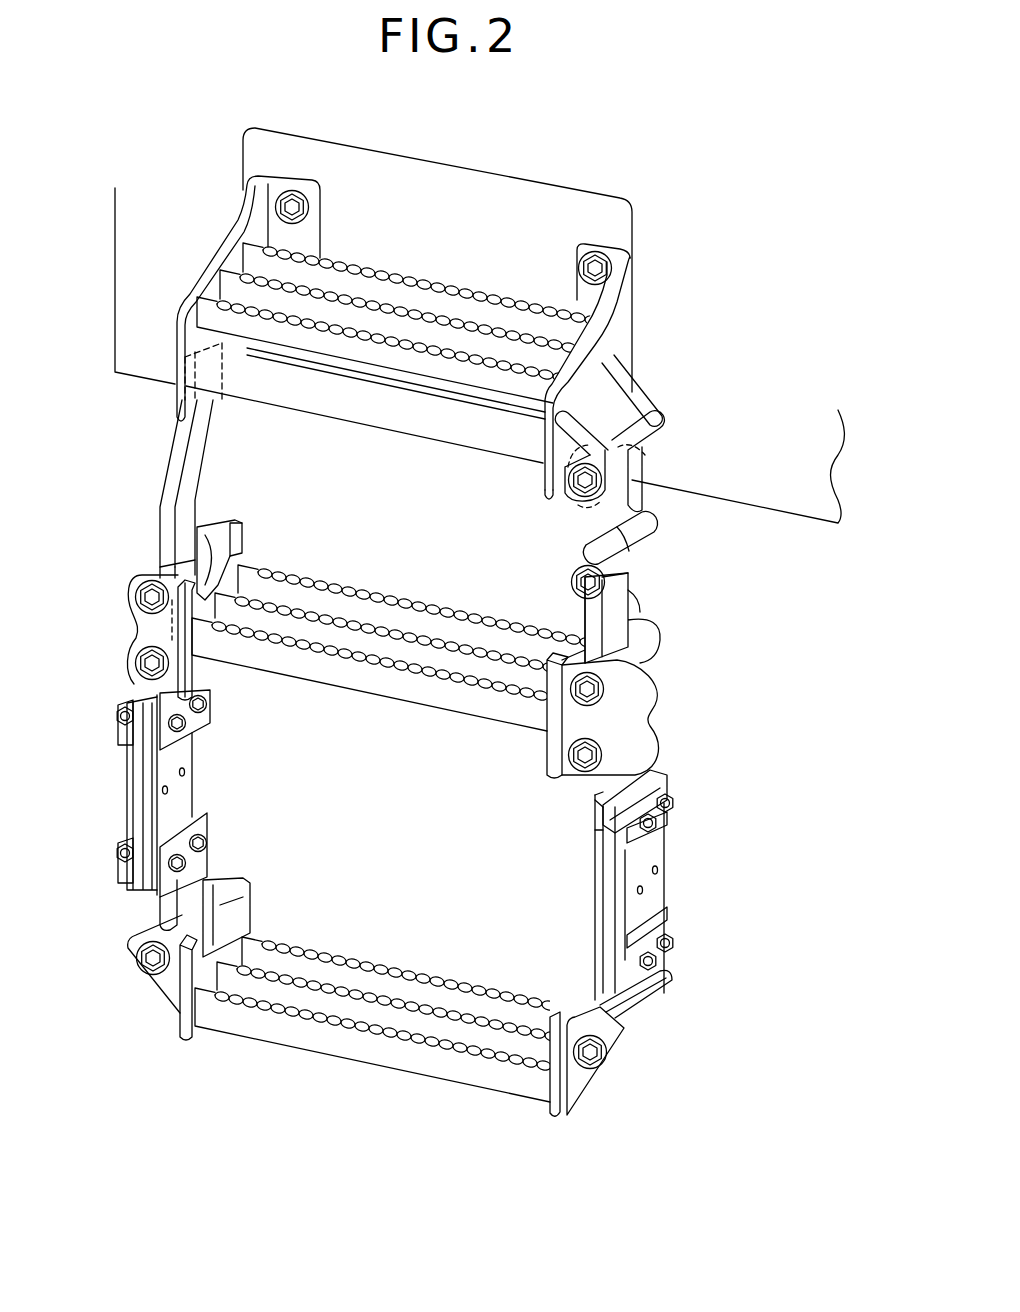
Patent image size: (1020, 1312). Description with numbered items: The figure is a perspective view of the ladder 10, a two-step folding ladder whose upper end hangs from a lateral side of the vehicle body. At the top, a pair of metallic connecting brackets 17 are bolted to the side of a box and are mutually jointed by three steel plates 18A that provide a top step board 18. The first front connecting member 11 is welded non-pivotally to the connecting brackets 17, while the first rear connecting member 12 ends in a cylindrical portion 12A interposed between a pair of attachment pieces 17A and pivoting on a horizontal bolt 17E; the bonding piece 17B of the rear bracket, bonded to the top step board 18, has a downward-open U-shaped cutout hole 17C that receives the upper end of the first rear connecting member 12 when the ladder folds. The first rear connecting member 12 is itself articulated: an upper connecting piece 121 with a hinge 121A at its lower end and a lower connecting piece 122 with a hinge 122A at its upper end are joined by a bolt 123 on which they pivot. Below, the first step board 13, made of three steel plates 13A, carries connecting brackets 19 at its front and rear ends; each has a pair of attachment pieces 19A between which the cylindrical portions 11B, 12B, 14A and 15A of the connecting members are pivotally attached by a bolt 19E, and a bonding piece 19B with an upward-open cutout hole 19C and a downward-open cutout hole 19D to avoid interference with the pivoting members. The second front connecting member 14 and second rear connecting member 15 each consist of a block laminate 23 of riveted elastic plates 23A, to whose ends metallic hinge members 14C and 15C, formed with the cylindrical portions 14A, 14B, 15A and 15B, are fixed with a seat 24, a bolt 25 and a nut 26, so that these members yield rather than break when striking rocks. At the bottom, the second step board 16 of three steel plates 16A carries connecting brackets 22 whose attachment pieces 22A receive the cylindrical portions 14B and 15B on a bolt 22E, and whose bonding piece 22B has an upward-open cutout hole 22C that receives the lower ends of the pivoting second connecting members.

The ladder 10 is at (488, 112).
The first front connecting member 11 is at (167, 470).
The cylindrical portion 11B is at (153, 563).
The first rear connecting member 12 is at (716, 535).
The cylindrical portion 12A is at (634, 452).
The cylindrical portion 12B is at (640, 657).
The upper connecting piece 121 is at (645, 518).
The hinge 121A is at (633, 605).
The lower connecting piece 122 is at (632, 588).
The hinge 122A is at (618, 547).
The bolt 123 is at (584, 588).
The first step board 13 is at (438, 572).
The steel plates 13A is at (372, 645).
The second front connecting member 14 is at (155, 757).
The cylindrical portion 14A is at (173, 617).
The cylindrical portion 14B is at (207, 900).
The hinge member 14C is at (180, 740).
The second rear connecting member 15 is at (658, 892).
The cylindrical portion 15A is at (630, 727).
The cylindrical portion 15B is at (630, 1017).
The hinge member 15C is at (597, 822).
The second step board 16 is at (428, 946).
The steel plates 16A is at (393, 1040).
The connecting brackets 17 is at (212, 262).
The attachment pieces 17A is at (640, 393).
The bonding piece 17B is at (617, 338).
The cutout hole 17C is at (548, 484).
The bolt 17E is at (587, 497).
The top step board 18 is at (482, 252).
The steel plates 18A is at (420, 360).
The connecting brackets 19 is at (247, 553).
The attachment pieces 19A is at (195, 523).
The bonding piece 19B is at (247, 540).
The cutout hole 19C is at (224, 527).
The cutout hole 19D is at (200, 660).
The bolt 19E is at (143, 598).
The connecting brackets 22 is at (187, 1010).
The attachment pieces 22A is at (172, 978).
The bonding piece 22B is at (180, 1007).
The cutout hole 22C is at (225, 927).
The bolt 22E is at (147, 963).
The block laminate 23 is at (57, 818).
The elastic plates 23A is at (153, 800).
The seat 24 is at (120, 735).
The bolt 25 is at (115, 717).
The nut 26 is at (187, 730).